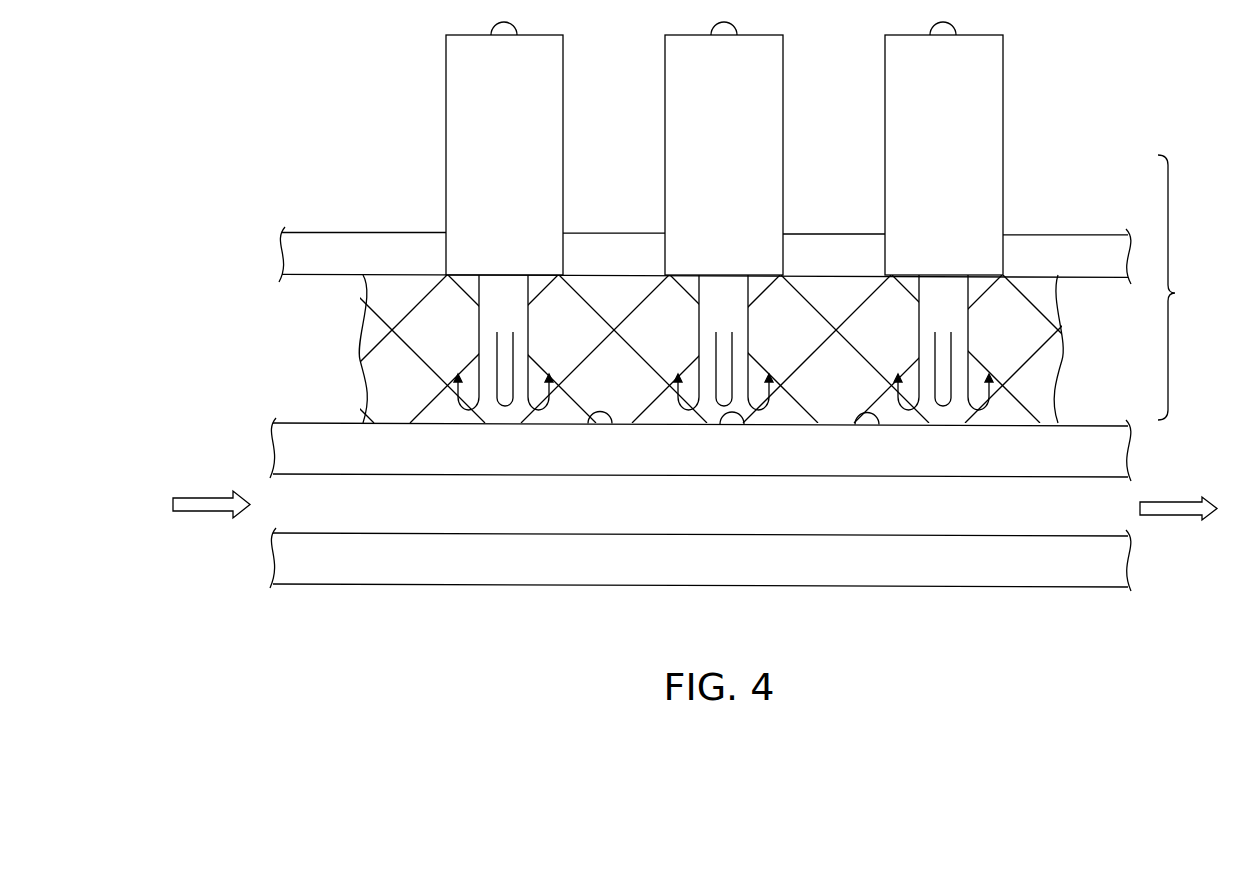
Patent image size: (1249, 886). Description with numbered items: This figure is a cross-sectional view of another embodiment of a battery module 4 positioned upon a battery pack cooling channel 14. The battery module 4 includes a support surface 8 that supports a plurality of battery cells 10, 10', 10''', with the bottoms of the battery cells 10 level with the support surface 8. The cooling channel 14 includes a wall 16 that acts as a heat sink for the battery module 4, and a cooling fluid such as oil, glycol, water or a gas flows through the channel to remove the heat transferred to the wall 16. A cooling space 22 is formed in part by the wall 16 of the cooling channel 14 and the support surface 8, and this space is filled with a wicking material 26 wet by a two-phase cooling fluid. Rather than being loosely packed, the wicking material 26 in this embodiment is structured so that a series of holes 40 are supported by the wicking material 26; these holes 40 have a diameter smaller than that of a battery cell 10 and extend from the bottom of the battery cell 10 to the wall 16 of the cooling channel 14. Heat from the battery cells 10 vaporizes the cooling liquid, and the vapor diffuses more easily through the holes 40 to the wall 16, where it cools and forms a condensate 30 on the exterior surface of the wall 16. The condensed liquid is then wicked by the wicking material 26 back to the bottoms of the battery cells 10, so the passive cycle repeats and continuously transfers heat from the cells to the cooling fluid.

The battery module 4 is at (1175, 287).
The support surface 8 is at (1068, 236).
The battery cell 10 is at (504, 148).
The battery cell 10' is at (724, 148).
The battery cell 10''' is at (944, 148).
The battery pack cooling channel 14 is at (701, 534).
The wall 16 is at (1105, 452).
The cooling space 22 is at (560, 339).
The wicking material 26 is at (815, 308).
The condensate 30 is at (600, 424).
The holes 40 is at (490, 306).